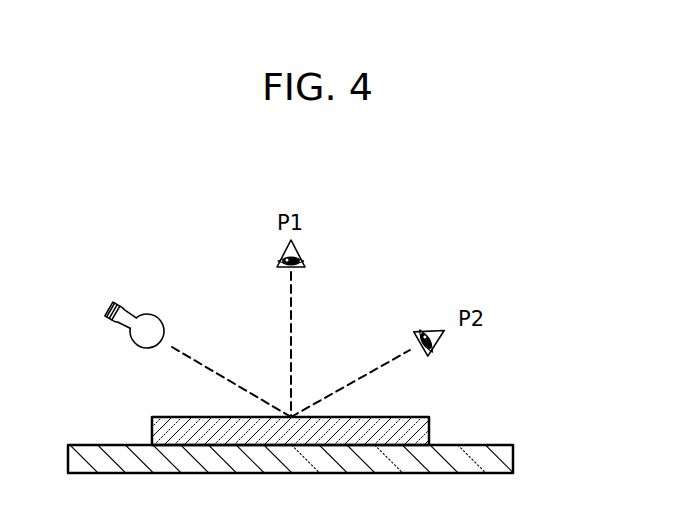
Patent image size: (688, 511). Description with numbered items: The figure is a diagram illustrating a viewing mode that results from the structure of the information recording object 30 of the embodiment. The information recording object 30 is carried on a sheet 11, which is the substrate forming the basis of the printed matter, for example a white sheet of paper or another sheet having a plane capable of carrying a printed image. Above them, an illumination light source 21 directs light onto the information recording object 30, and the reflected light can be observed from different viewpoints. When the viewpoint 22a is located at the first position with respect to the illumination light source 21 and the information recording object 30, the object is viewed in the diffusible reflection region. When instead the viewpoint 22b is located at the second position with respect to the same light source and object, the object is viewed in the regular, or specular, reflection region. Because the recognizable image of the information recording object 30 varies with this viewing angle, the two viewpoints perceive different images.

The sheet 11 is at (514, 460).
The information recording object 30 is at (430, 430).
The illumination light source 21 is at (132, 341).
The viewpoint 22a is at (301, 252).
The viewpoint 22b is at (437, 345).